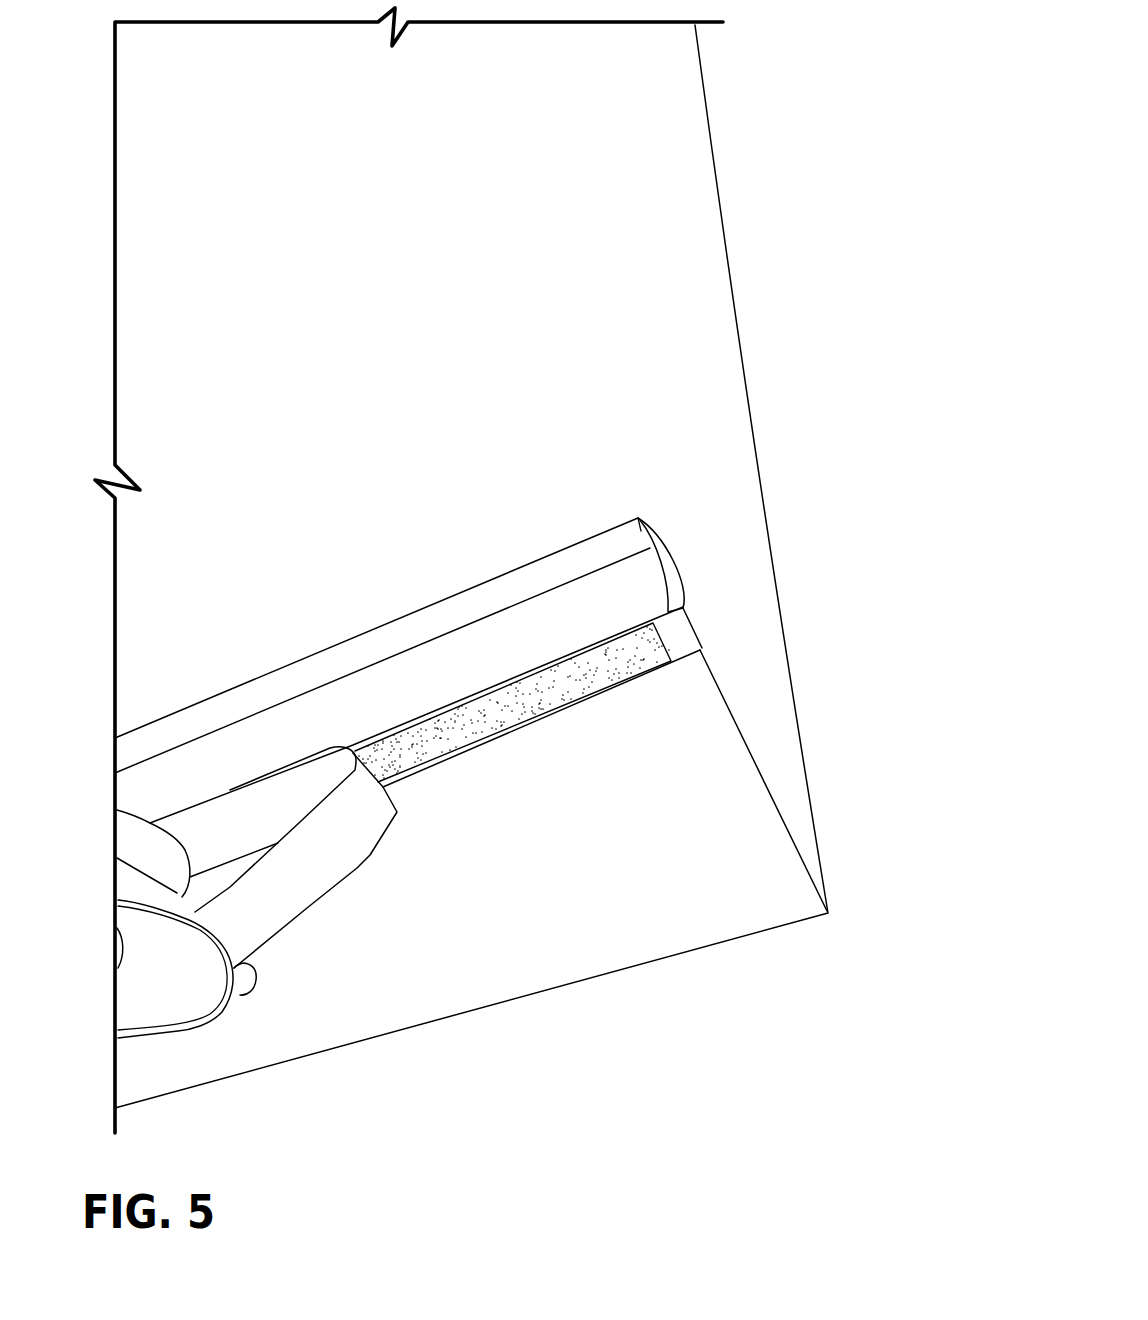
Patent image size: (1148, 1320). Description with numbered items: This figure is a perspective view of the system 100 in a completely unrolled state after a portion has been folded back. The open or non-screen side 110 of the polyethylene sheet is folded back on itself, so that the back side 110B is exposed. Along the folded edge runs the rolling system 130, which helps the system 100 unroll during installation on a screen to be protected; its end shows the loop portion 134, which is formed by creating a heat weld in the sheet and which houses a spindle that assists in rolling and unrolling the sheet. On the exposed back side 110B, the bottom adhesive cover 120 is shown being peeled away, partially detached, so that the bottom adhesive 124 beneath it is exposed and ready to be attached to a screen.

The system 100 is at (790, 201).
The open or non-screen side 110 is at (234, 551).
The back side 110B is at (601, 898).
The bottom adhesive cover 120 is at (298, 903).
The bottom adhesive 124 is at (573, 680).
The rolling system 130 is at (508, 568).
The loop portion 134 is at (677, 567).